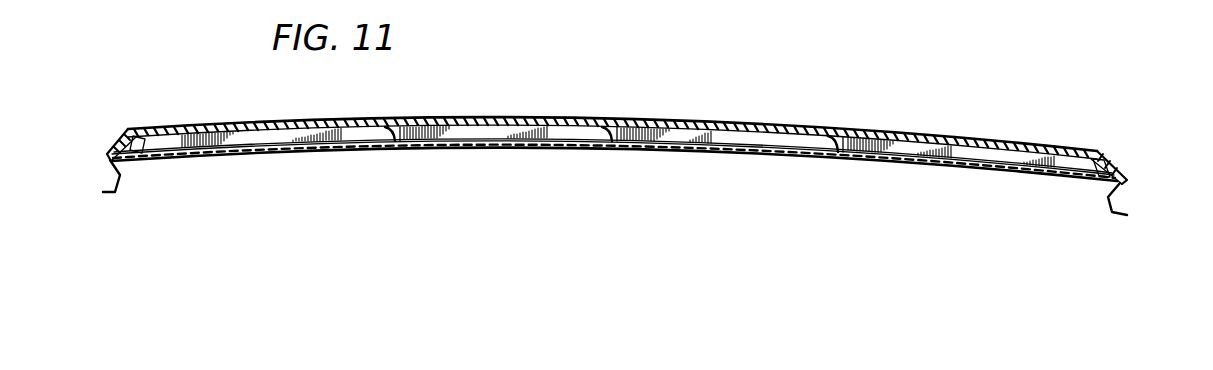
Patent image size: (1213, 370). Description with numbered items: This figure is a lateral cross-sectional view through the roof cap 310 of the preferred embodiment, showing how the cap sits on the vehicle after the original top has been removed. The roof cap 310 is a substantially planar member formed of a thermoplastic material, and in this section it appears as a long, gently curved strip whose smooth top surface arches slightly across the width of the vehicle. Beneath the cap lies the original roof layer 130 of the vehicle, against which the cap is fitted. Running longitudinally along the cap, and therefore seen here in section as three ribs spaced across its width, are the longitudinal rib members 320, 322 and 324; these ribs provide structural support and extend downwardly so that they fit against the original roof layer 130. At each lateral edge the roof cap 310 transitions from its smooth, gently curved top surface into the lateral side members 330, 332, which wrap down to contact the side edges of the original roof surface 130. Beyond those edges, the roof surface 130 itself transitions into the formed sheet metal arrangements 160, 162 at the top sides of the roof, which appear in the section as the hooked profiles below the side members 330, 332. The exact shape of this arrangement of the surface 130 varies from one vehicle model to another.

The roof cap 310 is at (253, 123).
The original roof layer 130 is at (530, 145).
The longitudinal rib member 320 is at (380, 133).
The longitudinal rib member 322 is at (605, 140).
The longitudinal rib member 324 is at (833, 141).
The lateral side member 330 is at (1127, 180).
The lateral side member 332 is at (115, 153).
The formed sheet metal arrangement 160 is at (123, 188).
The formed sheet metal arrangement 162 is at (1113, 212).